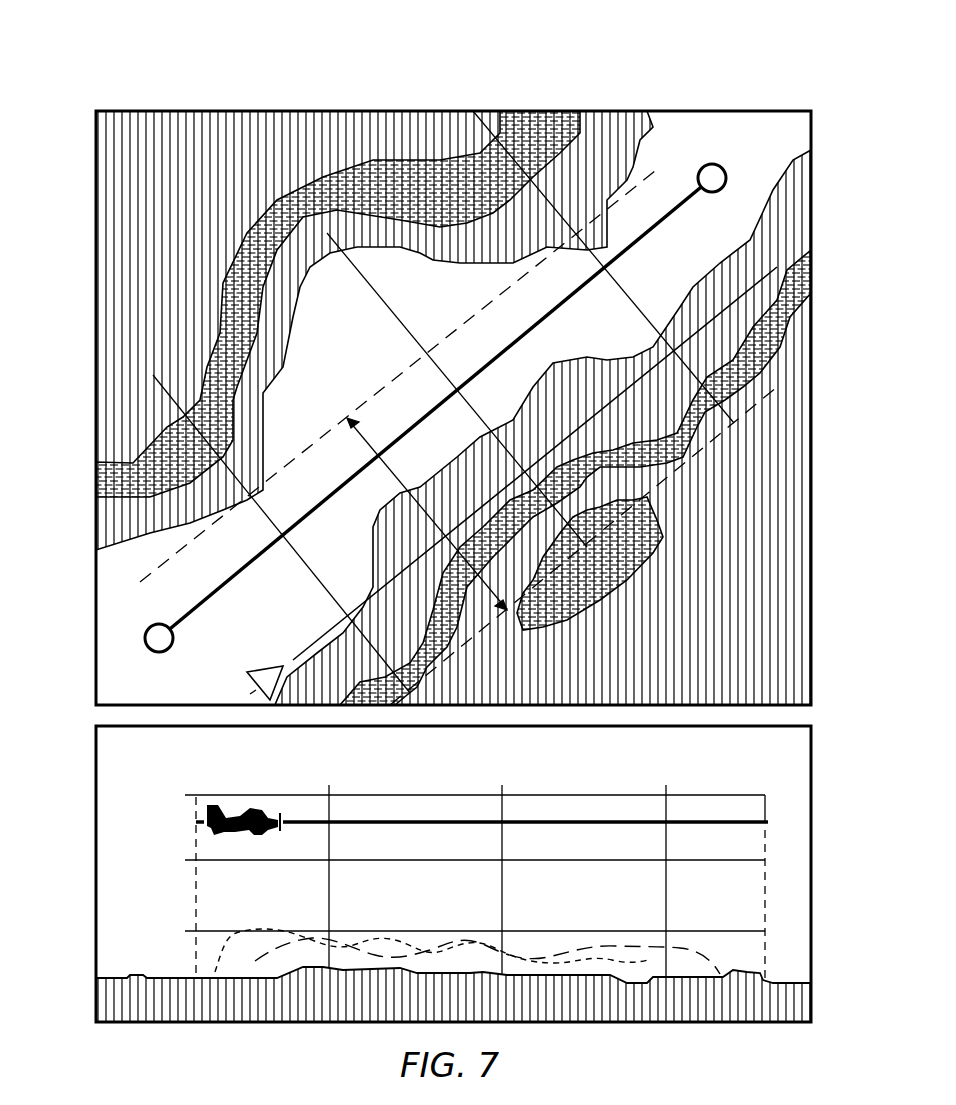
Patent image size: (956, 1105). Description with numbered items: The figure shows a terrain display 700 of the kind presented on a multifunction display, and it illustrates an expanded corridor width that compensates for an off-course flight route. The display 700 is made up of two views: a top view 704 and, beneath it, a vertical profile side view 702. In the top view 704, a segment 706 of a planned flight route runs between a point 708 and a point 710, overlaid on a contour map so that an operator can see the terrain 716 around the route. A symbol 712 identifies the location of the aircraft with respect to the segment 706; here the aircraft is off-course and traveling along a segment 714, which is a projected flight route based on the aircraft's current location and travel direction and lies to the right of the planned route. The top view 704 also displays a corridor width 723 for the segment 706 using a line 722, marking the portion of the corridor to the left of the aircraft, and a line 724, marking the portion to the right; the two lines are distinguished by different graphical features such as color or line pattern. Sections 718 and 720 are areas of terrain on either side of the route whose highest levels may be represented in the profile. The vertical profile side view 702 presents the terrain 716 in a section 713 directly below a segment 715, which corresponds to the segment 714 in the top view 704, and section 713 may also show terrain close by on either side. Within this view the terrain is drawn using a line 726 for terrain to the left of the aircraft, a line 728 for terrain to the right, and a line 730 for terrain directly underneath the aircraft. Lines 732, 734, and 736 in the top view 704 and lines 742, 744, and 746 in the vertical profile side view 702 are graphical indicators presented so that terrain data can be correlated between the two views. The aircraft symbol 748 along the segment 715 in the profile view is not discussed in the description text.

The display 700 is at (327, 58).
The vertical profile side view 702 is at (816, 897).
The top view 704 is at (816, 207).
The segment 706 is at (663, 210).
The point 708 is at (143, 641).
The point 710 is at (710, 163).
The symbol 712 is at (263, 668).
The section 713 is at (472, 1010).
The segment 714 is at (318, 640).
The segment 715 is at (612, 820).
The terrain 716 is at (222, 130).
The section 718 is at (199, 208).
The section 720 is at (747, 638).
The line 722 is at (395, 380).
The corridor width 723 is at (360, 437).
The line 724 is at (657, 485).
The line 726 is at (410, 940).
The line 728 is at (467, 935).
The line 730 is at (115, 977).
The line 732 is at (265, 517).
The line 734 is at (400, 320).
The line 736 is at (628, 297).
The line 742 is at (329, 895).
The line 744 is at (503, 895).
The line 746 is at (667, 846).
The aircraft symbol 748 is at (255, 800).